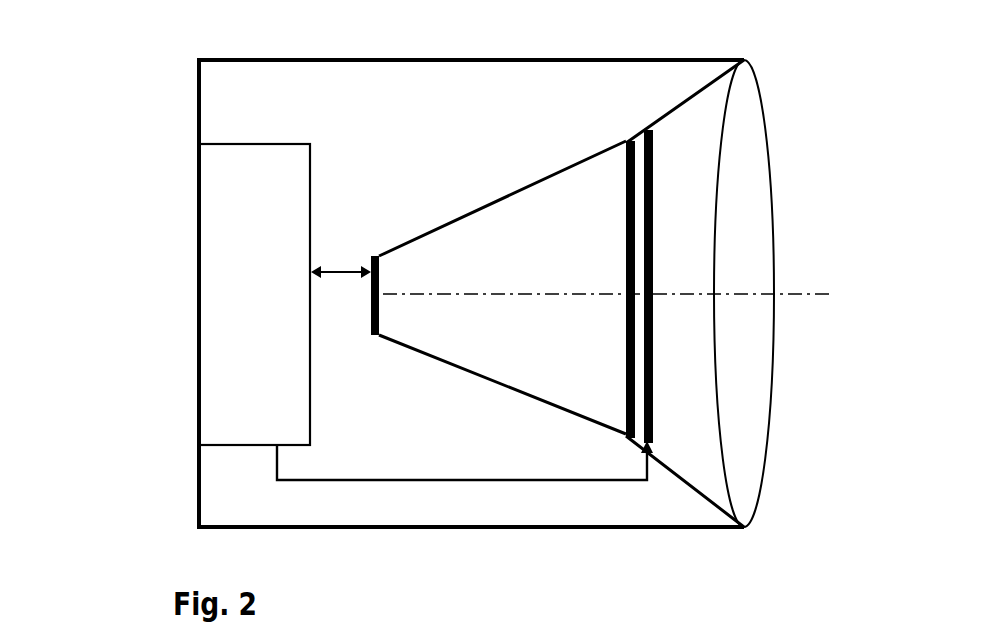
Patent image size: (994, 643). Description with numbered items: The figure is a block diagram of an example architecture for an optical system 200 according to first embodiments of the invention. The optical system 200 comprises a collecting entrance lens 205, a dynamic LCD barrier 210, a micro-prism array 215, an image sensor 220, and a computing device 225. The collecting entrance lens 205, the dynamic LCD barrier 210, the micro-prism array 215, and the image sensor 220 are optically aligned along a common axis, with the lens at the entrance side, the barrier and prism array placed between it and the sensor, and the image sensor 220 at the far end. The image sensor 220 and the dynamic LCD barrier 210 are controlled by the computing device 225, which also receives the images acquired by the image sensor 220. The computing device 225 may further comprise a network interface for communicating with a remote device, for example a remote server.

The optical system 200 is at (133, 43).
The collecting entrance lens 205 is at (752, 153).
The dynamic LCD barrier 210 is at (650, 145).
The micro-prism array 215 is at (626, 168).
The image sensor 220 is at (376, 327).
The computing device 225 is at (213, 400).